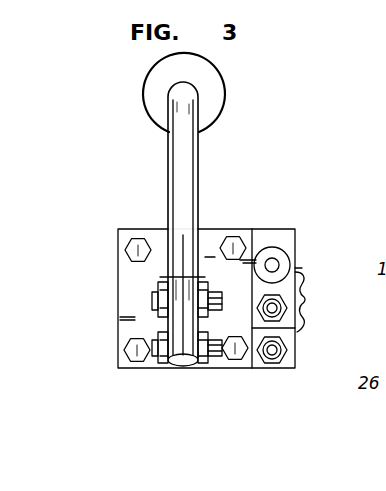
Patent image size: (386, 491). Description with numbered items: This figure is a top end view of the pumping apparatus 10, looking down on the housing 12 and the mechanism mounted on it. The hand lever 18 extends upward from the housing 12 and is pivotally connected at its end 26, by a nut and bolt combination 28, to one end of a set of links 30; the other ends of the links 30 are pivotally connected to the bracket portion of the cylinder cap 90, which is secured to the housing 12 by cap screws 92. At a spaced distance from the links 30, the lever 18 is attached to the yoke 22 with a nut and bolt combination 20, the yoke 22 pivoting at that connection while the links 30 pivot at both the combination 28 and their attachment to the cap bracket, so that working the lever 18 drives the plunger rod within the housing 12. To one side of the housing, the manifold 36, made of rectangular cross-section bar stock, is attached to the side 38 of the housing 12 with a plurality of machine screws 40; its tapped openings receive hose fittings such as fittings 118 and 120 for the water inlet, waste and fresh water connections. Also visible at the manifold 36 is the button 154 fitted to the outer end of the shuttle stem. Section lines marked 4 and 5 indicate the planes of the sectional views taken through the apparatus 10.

The section line 4- 4 is at (99, 258).
The section line 5- 5 is at (274, 228).
The pumping apparatus 10 is at (265, 122).
The housing 12 is at (125, 229).
The hand lever 18 is at (190, 153).
The nut and bolt combination 20 is at (157, 303).
The yoke 22 is at (160, 277).
The end of hand lever 26 is at (183, 370).
The nut and bolt combination 28 is at (155, 367).
The links 30 is at (163, 370).
The manifold 36 is at (294, 236).
The side of housing 38 is at (255, 240).
The machine screws 40 is at (303, 312).
The cylinder cap 90 is at (207, 230).
The cap screws 92 is at (130, 244).
The hose fitting 118 is at (293, 360).
The hose fitting 120 is at (296, 336).
The button 154 is at (300, 266).